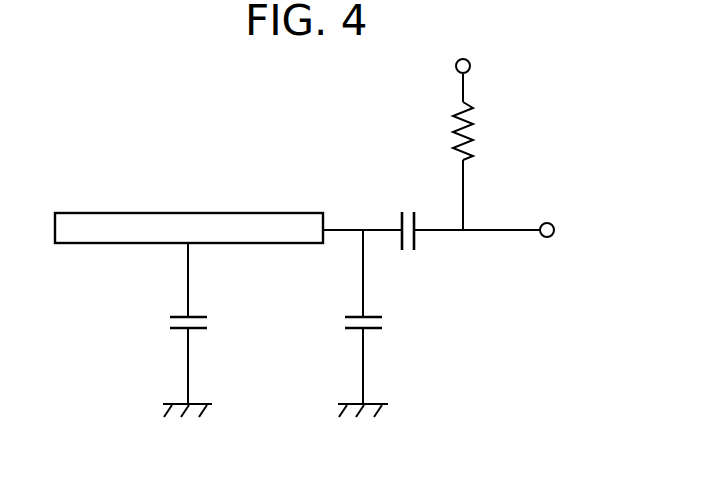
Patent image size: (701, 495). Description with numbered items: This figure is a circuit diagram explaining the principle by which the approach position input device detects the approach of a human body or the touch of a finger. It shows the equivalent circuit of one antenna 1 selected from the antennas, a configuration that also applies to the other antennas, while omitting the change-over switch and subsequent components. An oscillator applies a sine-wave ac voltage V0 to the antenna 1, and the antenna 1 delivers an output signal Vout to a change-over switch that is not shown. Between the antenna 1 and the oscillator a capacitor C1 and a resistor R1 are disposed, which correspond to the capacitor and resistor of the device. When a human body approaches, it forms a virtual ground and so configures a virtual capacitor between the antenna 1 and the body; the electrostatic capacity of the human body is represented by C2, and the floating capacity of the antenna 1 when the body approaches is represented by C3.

The antenna 1 is at (131, 222).
The capacitor C1 is at (408, 214).
The electrostatic capacity of the human body C2 is at (169, 364).
The floating capacity of the antenna C3 is at (381, 364).
The resistor R1 is at (482, 131).
The ac voltage V0 is at (477, 56).
The output signal Vout is at (575, 237).